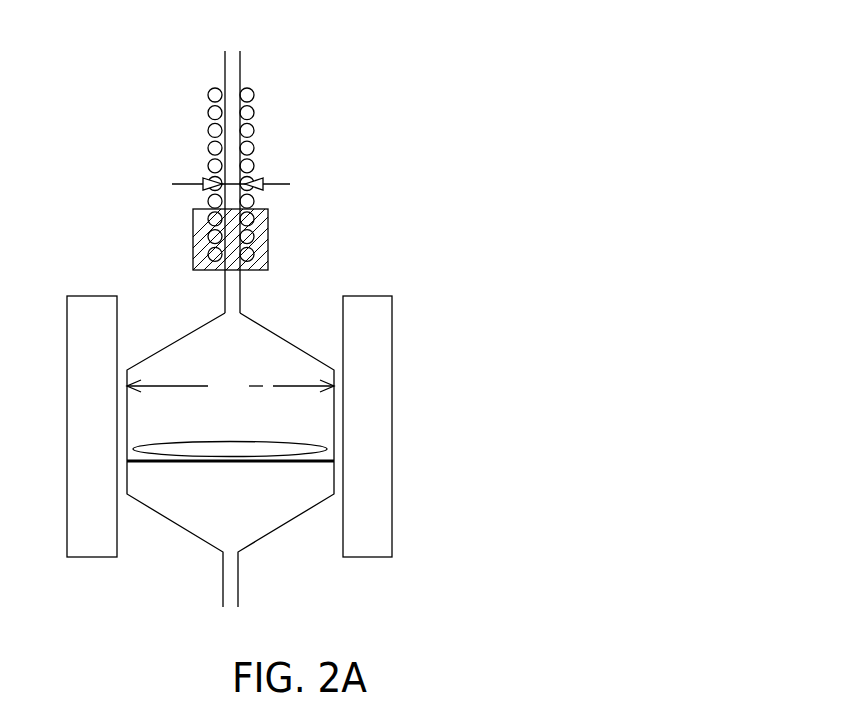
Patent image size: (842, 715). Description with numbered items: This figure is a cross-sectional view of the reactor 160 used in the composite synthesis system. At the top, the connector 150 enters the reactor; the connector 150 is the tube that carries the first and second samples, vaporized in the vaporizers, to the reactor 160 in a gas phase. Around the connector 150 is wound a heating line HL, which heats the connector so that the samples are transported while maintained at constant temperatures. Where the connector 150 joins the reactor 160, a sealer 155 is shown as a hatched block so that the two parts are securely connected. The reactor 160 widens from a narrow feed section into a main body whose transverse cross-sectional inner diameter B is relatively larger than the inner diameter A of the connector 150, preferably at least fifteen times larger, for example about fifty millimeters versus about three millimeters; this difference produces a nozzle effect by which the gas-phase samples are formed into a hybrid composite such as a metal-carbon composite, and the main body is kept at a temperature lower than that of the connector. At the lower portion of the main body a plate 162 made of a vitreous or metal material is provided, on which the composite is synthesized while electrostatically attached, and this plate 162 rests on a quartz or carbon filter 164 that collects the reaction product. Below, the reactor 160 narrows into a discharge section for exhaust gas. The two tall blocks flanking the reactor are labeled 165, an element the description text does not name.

The connector 150 is at (231, 124).
The heating line HL is at (254, 147).
The sealer 155 is at (193, 228).
The reactor 160 is at (282, 338).
The plate 162 is at (290, 449).
The quartz or carbon filter 164 is at (334, 462).
The heater 165 is at (393, 357).
The inner diameter of the connector A is at (240, 184).
The transverse cross-sectional inner diameter of the main body B is at (230, 386).